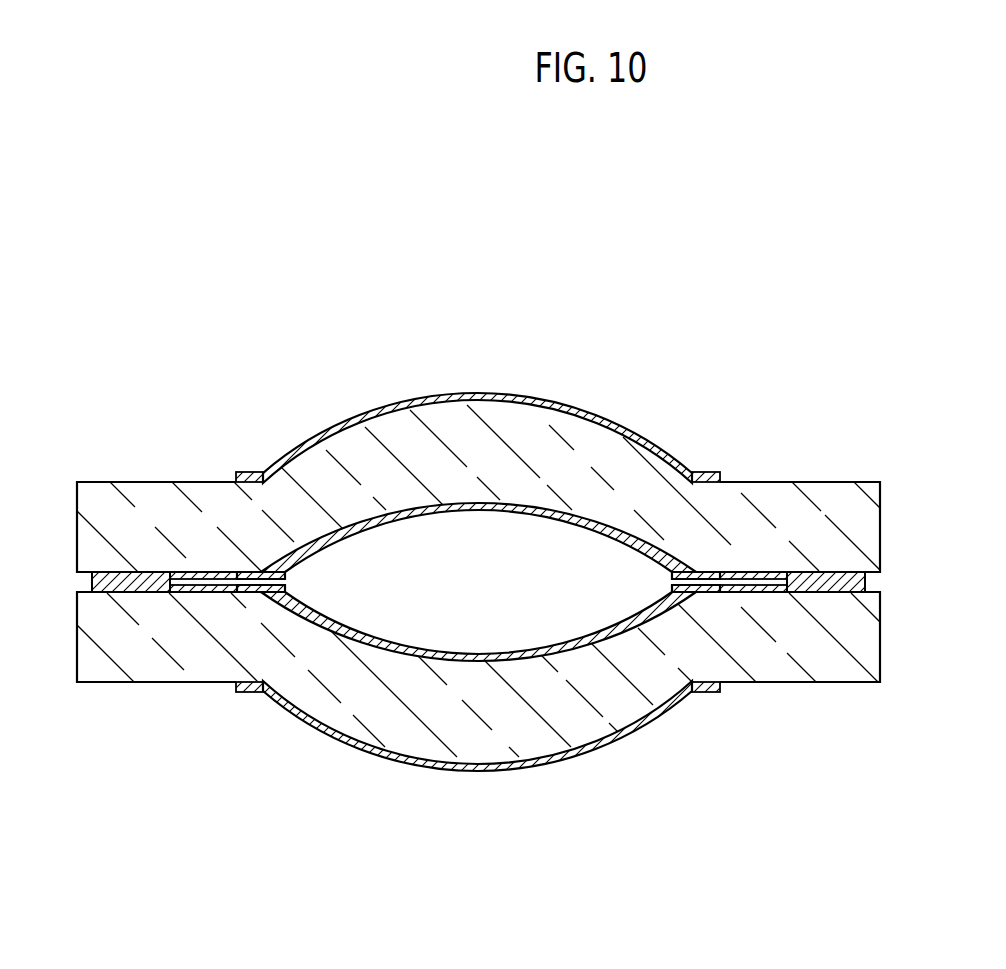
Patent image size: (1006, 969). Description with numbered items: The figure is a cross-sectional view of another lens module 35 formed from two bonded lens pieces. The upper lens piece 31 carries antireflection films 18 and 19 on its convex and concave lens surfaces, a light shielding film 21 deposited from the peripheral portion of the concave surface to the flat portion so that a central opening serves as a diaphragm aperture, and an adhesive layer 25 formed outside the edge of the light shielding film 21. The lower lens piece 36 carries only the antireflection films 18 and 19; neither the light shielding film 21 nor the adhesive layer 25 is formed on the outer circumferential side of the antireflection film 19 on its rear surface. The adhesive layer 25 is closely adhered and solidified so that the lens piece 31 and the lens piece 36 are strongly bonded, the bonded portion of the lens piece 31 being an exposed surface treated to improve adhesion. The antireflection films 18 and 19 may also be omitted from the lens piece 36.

The antireflection film 18 is at (373, 410).
The antireflection film 19 is at (407, 643).
The light shielding film 21 is at (208, 577).
The adhesive layer 25 is at (113, 576).
The lens piece 31 is at (881, 527).
The lens module 35 is at (800, 277).
The lens piece 36 is at (881, 637).